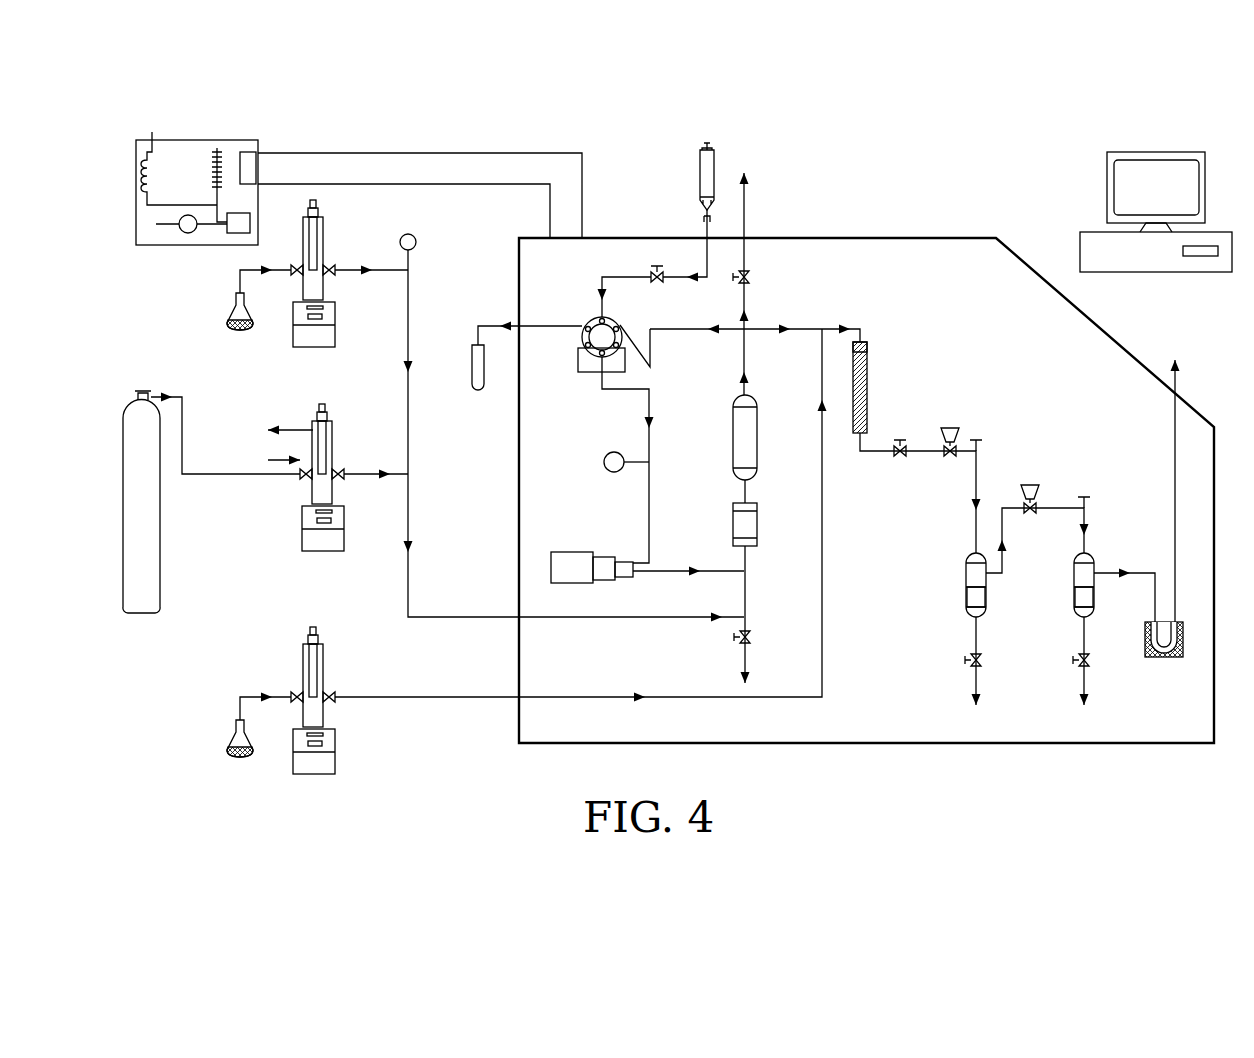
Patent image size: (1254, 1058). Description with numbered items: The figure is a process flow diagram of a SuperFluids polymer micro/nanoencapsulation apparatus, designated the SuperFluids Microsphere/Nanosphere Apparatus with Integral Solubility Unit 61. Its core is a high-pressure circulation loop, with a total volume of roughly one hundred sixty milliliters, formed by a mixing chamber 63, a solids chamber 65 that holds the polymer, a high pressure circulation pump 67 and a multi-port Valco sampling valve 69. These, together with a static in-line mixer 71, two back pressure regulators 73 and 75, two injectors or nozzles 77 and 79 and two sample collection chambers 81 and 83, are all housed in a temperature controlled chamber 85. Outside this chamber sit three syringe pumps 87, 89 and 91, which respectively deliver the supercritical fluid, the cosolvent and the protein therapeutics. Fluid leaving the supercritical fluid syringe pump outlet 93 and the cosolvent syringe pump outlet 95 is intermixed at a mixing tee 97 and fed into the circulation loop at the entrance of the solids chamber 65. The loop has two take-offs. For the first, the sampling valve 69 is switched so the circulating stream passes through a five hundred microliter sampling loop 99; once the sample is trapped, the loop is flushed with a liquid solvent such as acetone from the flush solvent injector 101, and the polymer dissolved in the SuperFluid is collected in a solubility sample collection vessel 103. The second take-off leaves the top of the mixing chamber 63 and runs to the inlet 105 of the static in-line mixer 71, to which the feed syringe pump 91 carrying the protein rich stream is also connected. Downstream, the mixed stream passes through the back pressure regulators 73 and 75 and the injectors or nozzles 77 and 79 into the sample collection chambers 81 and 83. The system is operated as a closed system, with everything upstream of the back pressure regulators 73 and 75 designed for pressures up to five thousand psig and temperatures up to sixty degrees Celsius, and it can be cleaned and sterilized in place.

The SuperFluids Microsphere/Nanosphere Apparatus with Integral Solubility Unit 61 is at (365, 95).
The mixing chamber 63 is at (731, 423).
The solids chamber 65 is at (733, 523).
The high pressure circulation pump 67 is at (568, 552).
The multi-port Valco sampling valve 69 is at (588, 320).
The static in-line mixer 71 is at (869, 386).
The back pressure regulator 73 is at (951, 430).
The back pressure regulator 75 is at (1032, 493).
The injector or nozzle 77 is at (985, 598).
The injector or nozzle 79 is at (1092, 598).
The sample collection chamber 81 is at (968, 596).
The sample collection chamber 83 is at (1076, 595).
The temperature controlled chamber 85 is at (825, 238).
The syringe pump 87 is at (324, 553).
The syringe pump 89 is at (317, 348).
The feed syringe pump 91 is at (318, 774).
The supercritical fluid syringe pump outlet 93 is at (333, 472).
The cosolvent syringe pump outlet 95 is at (327, 268).
The mixing tee 97 is at (424, 473).
The sampling loop 99 is at (579, 376).
The flush solvent injector 101 is at (697, 165).
The solubility sample collection vessel 103 is at (476, 392).
The inlet of the static in-line mixer 105 is at (866, 346).